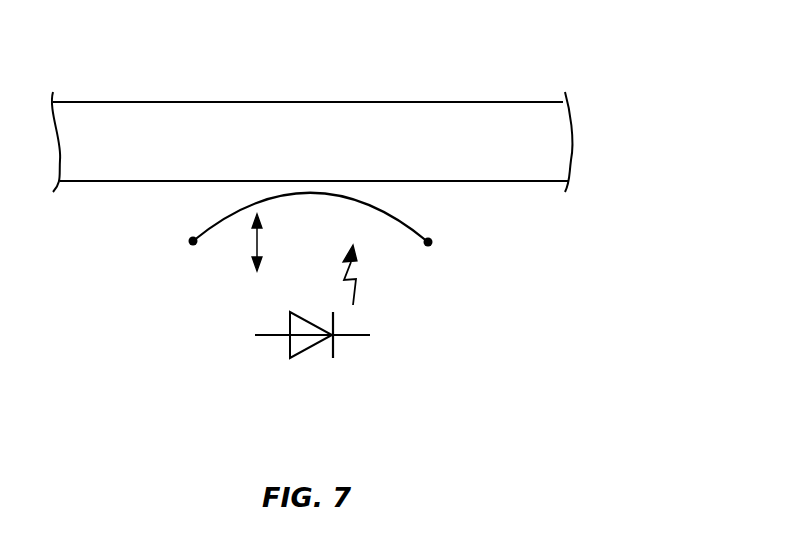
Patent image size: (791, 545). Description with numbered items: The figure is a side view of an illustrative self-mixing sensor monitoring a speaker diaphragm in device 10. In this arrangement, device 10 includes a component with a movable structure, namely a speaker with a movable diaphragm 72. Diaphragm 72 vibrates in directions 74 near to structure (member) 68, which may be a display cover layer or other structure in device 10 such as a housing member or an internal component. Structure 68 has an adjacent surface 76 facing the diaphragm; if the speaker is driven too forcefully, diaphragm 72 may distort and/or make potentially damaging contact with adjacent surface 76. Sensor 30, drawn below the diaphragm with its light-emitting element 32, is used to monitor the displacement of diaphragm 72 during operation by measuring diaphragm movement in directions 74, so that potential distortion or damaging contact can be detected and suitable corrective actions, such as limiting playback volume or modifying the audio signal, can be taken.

The device 10 is at (638, 70).
The structure (member) 68 is at (470, 117).
The adjacent surface 76 is at (525, 182).
The diaphragm 72 is at (405, 218).
The directions 74 is at (256, 241).
The light-emitting diode 32 is at (308, 347).
The sensor 30 is at (267, 385).